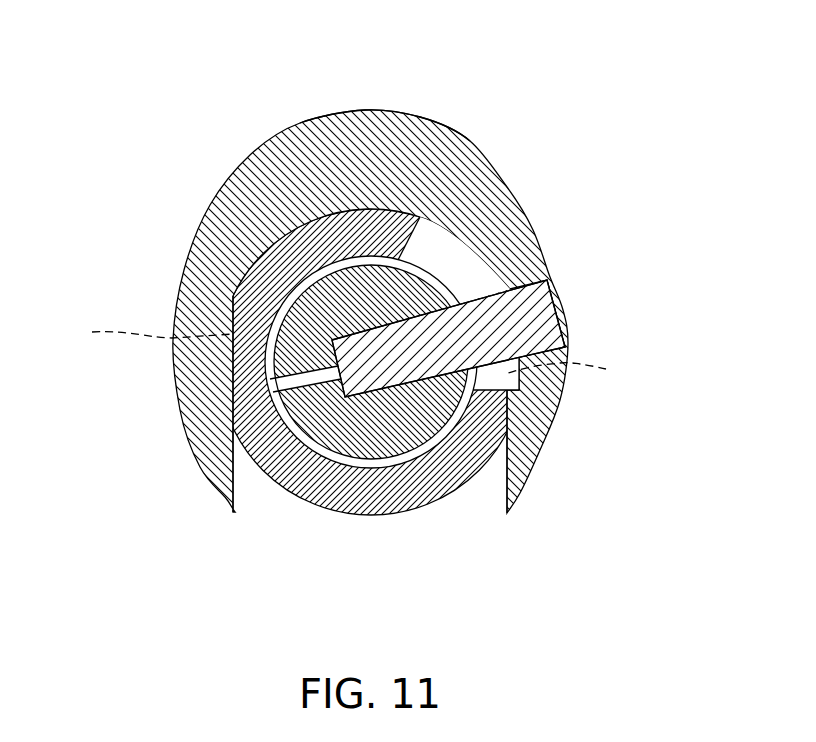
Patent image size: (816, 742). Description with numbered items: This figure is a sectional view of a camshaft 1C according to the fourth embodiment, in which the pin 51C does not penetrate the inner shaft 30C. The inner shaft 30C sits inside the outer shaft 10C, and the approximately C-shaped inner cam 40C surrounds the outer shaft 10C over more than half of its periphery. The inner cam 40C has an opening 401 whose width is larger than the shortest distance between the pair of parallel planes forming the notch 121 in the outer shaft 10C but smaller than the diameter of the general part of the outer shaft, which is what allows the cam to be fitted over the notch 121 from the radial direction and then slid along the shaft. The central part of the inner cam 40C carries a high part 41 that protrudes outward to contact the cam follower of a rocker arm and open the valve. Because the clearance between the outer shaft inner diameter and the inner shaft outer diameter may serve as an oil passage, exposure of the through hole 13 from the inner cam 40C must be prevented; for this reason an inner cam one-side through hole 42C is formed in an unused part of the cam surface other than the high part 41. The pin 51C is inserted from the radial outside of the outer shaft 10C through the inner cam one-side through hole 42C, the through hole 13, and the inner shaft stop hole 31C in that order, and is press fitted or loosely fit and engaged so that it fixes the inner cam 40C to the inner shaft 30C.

The camshaft 1C is at (361, 323).
The outer shaft 10C is at (330, 513).
The through hole 13 is at (405, 246).
The inner shaft 30C is at (379, 438).
The inner shaft stop hole 31C is at (388, 392).
The inner cam 40C is at (205, 232).
The high part 41 is at (367, 108).
The opening 401 is at (240, 492).
The inner cam one-side through hole 42C is at (487, 294).
The pin 51C is at (484, 312).
The notch 121 is at (351, 352).